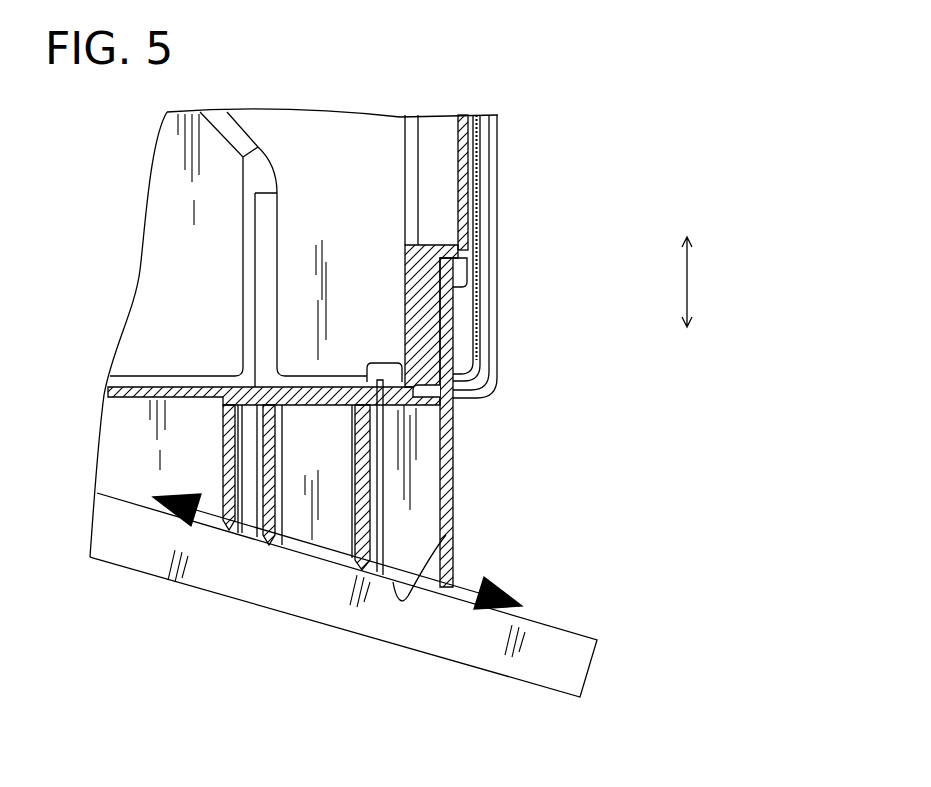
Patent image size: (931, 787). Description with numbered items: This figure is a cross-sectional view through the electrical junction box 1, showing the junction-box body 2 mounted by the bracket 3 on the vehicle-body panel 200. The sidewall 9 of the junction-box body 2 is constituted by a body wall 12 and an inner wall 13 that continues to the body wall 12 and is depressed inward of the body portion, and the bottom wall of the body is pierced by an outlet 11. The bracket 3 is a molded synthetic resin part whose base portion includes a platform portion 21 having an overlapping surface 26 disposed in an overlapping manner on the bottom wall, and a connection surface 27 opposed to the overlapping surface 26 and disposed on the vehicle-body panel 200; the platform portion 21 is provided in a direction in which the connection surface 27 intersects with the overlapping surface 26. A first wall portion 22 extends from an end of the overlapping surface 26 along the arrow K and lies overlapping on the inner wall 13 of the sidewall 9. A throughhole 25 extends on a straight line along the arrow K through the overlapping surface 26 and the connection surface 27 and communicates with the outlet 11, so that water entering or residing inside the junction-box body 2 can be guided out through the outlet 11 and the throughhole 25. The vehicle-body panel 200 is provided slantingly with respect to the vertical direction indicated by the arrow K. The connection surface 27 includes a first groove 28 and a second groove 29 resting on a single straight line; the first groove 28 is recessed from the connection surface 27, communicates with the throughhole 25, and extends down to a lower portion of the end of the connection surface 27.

The electrical junction box 1 is at (595, 142).
The junction-box body 2 is at (532, 220).
The bracket 3 is at (583, 424).
The sidewall 9 is at (501, 251).
The outlet 11 is at (467, 383).
The body wall 12 is at (463, 213).
The inner wall 13 is at (427, 287).
The platform portion 21 is at (452, 458).
The first wall portion 22 is at (447, 343).
The throughhole 25 is at (410, 492).
The overlapping surface 26 is at (400, 380).
The connection surface 27 is at (450, 541).
The first groove 28 is at (443, 592).
The second groove 29 is at (275, 548).
The vehicle-body panel 200 is at (575, 662).
The arrow K is at (690, 268).